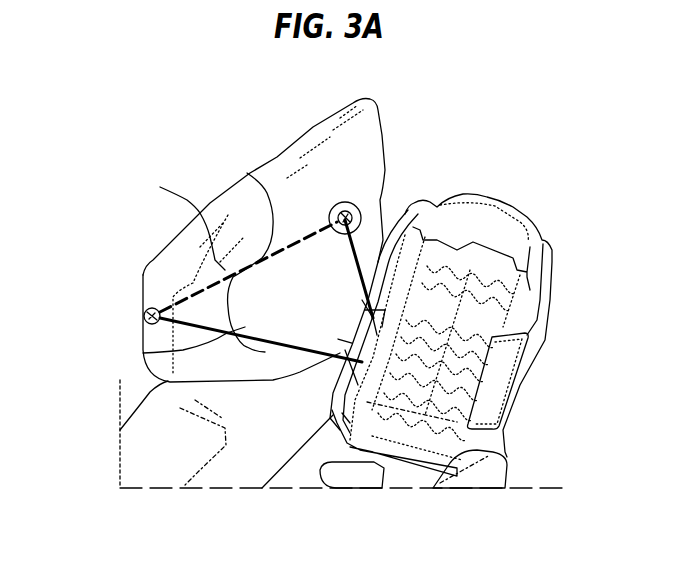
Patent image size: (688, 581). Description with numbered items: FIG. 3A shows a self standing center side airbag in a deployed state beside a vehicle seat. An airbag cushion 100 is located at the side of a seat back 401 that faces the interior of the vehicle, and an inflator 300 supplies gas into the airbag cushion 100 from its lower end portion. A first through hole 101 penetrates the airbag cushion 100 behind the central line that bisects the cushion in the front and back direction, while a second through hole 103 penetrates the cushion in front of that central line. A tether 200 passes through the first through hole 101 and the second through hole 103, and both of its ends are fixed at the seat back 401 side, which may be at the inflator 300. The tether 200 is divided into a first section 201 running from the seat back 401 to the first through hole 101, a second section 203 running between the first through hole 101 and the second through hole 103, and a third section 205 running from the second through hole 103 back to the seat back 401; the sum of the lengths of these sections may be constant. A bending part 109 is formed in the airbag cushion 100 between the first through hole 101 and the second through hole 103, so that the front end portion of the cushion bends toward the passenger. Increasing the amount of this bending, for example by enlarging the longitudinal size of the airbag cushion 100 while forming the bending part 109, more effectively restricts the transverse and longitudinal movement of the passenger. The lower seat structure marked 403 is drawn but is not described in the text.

The airbag cushion 100 is at (381, 133).
The first through hole 101 is at (358, 208).
The second through hole 103 is at (145, 312).
The bending part 109 is at (166, 224).
The tether 200 is at (282, 346).
The first section 201 is at (357, 252).
The second section 203 is at (247, 173).
The third section 205 is at (143, 353).
The inflator 300 is at (343, 445).
The seat back 401 is at (537, 290).
The lower trim 403 is at (180, 455).